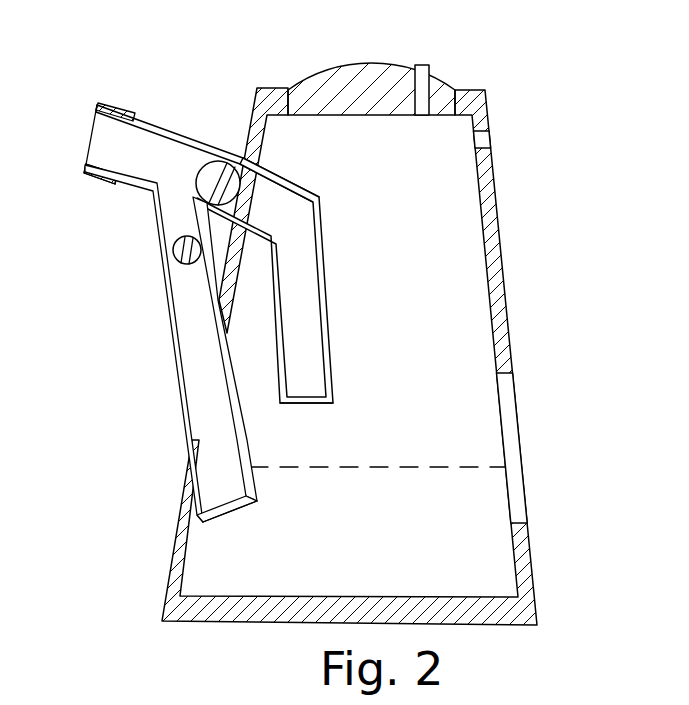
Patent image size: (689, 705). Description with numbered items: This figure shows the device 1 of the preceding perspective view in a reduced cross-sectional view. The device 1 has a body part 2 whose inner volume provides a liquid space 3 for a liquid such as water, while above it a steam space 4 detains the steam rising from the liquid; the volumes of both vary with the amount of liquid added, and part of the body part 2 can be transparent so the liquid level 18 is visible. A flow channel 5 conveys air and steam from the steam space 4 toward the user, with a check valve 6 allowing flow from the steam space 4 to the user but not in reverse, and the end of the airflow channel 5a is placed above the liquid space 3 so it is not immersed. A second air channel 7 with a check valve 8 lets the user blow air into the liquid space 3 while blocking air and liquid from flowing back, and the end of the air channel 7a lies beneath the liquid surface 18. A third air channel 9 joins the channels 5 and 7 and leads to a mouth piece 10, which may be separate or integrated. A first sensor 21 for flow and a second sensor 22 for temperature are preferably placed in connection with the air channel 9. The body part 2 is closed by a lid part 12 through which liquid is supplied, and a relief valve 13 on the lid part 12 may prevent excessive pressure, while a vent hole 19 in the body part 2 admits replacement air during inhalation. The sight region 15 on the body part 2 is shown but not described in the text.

The device 1 is at (397, 316).
The body part 2 is at (505, 291).
The liquid space 3 is at (352, 521).
The steam space 4 is at (359, 435).
The flow channel 5 is at (314, 286).
The end of the airflow channel 5a is at (314, 398).
The check valve 6 is at (211, 162).
The air channel 7 is at (175, 367).
The end of the air channel 7a is at (231, 514).
The check valve 8 is at (174, 244).
The air channel 9 is at (146, 148).
The mouth piece 10 is at (108, 97).
The lid part 12 is at (313, 77).
The relief valve 13 is at (421, 64).
The sight window 15 is at (513, 413).
The liquid level 18 is at (436, 469).
The vent hole 19 is at (493, 139).
The first sensor 21 is at (100, 160).
The second sensor 22 is at (100, 160).